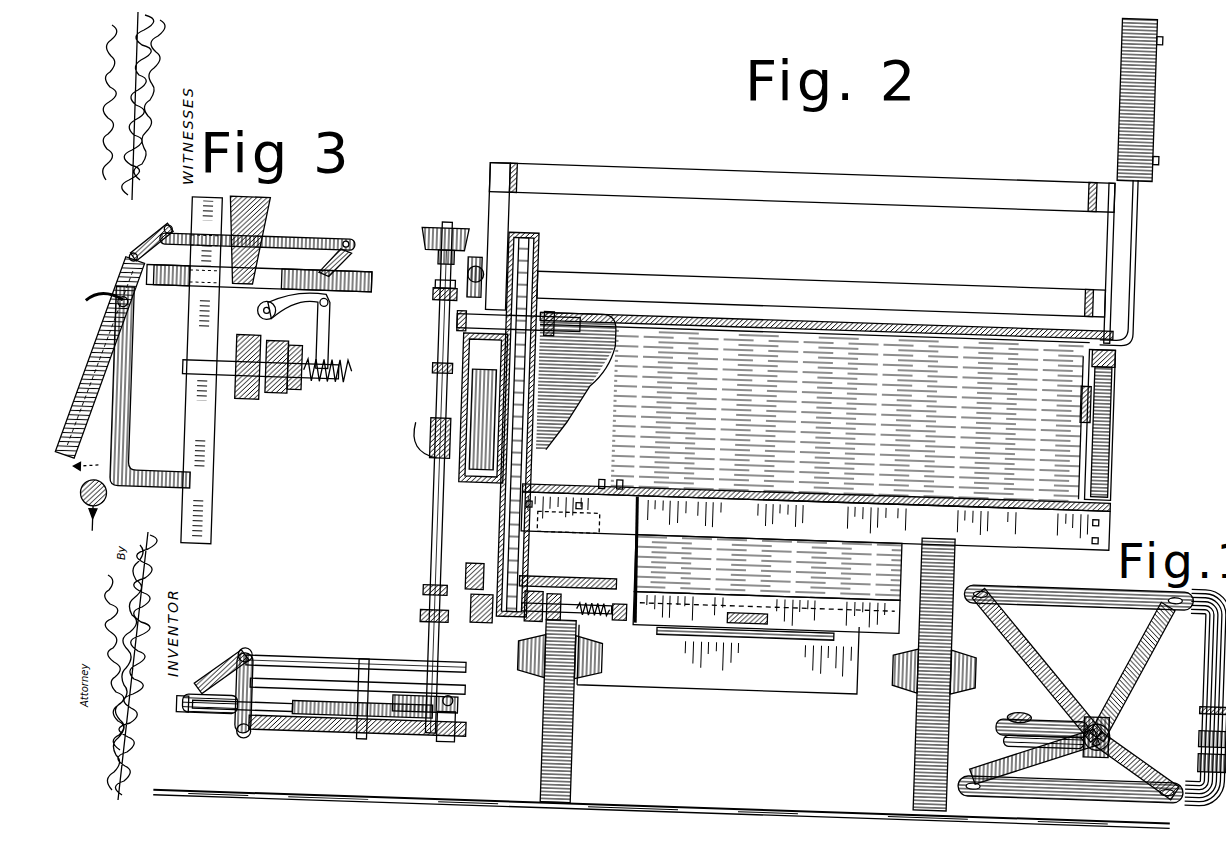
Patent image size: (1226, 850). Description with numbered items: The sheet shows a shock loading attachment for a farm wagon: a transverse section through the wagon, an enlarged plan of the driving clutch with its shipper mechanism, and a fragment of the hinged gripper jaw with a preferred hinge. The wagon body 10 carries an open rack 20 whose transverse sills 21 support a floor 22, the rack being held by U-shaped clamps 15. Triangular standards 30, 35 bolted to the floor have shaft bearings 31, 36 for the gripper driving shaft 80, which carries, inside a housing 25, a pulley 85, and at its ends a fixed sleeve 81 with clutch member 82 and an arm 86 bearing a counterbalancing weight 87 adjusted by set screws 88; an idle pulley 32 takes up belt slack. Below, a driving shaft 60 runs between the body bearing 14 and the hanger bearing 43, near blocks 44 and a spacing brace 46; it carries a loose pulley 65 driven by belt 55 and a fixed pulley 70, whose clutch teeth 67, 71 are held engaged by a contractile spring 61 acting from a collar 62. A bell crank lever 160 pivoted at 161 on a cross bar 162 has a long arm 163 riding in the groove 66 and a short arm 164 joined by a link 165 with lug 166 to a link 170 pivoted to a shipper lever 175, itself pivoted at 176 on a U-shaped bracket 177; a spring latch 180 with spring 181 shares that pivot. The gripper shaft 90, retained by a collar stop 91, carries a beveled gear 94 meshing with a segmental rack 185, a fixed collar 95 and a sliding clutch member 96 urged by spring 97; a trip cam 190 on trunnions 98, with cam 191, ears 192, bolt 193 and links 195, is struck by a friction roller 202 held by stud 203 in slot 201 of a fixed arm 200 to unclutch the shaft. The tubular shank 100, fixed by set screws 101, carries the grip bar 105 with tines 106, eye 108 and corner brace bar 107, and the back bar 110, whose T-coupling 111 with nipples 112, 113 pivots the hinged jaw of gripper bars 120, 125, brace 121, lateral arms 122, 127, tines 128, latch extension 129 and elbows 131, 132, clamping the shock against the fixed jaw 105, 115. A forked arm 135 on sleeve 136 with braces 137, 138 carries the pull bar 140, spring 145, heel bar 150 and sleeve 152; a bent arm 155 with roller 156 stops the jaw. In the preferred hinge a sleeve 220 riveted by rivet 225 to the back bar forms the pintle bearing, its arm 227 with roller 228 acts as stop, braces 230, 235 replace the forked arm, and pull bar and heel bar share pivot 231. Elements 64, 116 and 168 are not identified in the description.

In FIG. 2, the wagon body 10 is at (728, 563).
In FIG. 2, the shaft bearing 14 is at (692, 600).
In FIG. 2, the U-shaped bolts or clamps 15 is at (560, 500).
In FIG. 2, the open rack 20 is at (488, 182).
In FIG. 2, the transverse sills 21 is at (622, 494).
In FIG. 2, the floor 22 is at (696, 492).
In FIG. 2, the housing 25 is at (865, 360).
In FIG. 2, the machine standard 30 is at (590, 352).
In FIG. 2, the shaft bearing 31 is at (540, 318).
In FIG. 2, the idle pulley 32 is at (578, 405).
In FIG. 2, the machine standard 35 is at (1118, 377).
In FIG. 2, the shaft bearing 36 is at (1097, 335).
In FIG. 2, the shaft bearing 43 is at (485, 618).
In FIG. 2, the block 44 is at (640, 486).
In FIG. 2, the spacing brace 46 is at (483, 566).
In FIG. 3, the spacing brace 46 is at (207, 446).
In FIG. 2, the belt 55 is at (572, 668).
In FIG. 2, the driving shaft 60 is at (514, 618).
In FIG. 3, the driving shaft 60 is at (348, 368).
In FIG. 3, the contractile spring 61 is at (340, 362).
In FIG. 2, the collar 62 is at (645, 638).
In FIG. 2, the collar 64 is at (616, 622).
In FIG. 2, the loose pulley 65 is at (600, 618).
In FIG. 3, the loose pulley 65 is at (292, 395).
In FIG. 2, the groove 66 is at (600, 620).
In FIG. 3, the groove 66 is at (325, 386).
In FIG. 2, the clutch teeth 67 is at (560, 610).
In FIG. 3, the clutch teeth 67 is at (272, 396).
In FIG. 2, the fixed pulley 70 is at (530, 612).
In FIG. 3, the fixed pulley 70 is at (243, 402).
In FIG. 2, the clutch teeth 71 is at (548, 606).
In FIG. 3, the clutch teeth 71 is at (262, 402).
In FIG. 2, the gripper driving shaft 80 is at (575, 323).
In FIG. 2, the fixed sleeve 81 is at (438, 345).
In FIG. 2, the fixed clutch member 82 is at (436, 422).
In FIG. 2, the pulley 85 is at (530, 265).
In FIG. 2, the arm 86 is at (1135, 248).
In FIG. 2, the weight 87 is at (1123, 95).
In FIG. 2, the set screws 88 is at (1155, 40).
In FIG. 2, the gripper shaft 90 is at (440, 291).
In FIG. 3, the gripper shaft 90 is at (81, 500).
In FIG. 2, the collar stop 91 is at (441, 306).
In FIG. 2, the beveled gear 94 is at (430, 232).
In FIG. 2, the fixed collar 95 is at (432, 478).
In FIG. 2, the sliding clutch member 96 is at (432, 416).
In FIG. 2, the spring 97 is at (420, 456).
In FIG. 2, the trunnions 98 is at (448, 446).
In FIG. 3, the tubular shank 100 is at (107, 500).
In FIG. 2, the set screws 101 is at (436, 548).
In FIG. 2, the grip bar 105 is at (466, 694).
In FIG. 3, the tines 106 is at (405, 657).
In FIG. 3, the corner brace bar 107 is at (421, 722).
In FIG. 2, the eye 108 is at (436, 566).
In FIG. 3, the back bar 110 is at (336, 680).
In FIG. 3, the vertical bearing 111 is at (248, 660).
In FIG. 3, the nipple 112 is at (287, 690).
In FIG. 3, the nipple 113 is at (238, 720).
In FIG. 3, the fixed jaw 115 is at (465, 718).
In FIG. 3, the pin 116 is at (456, 736).
In FIG. 3, the upper gripper bar 120 is at (386, 657).
In FIG. 13, the upper gripper bar 120 is at (1027, 592).
In FIG. 2, the brace 121 is at (432, 602).
In FIG. 3, the brace 121 is at (371, 655).
In FIG. 2, the lateral arm 122 is at (446, 666).
In FIG. 3, the lower gripper bar 125 is at (332, 734).
In FIG. 13, the lower gripper bar 125 is at (1074, 797).
In FIG. 3, the lateral arm 127 is at (428, 722).
In FIG. 3, the lateral tines 128 is at (300, 728).
In FIG. 3, the forward extension 129 is at (396, 736).
In FIG. 3, the elbow 131 is at (264, 672).
In FIG. 13, the elbow 131 is at (1192, 616).
In FIG. 3, the elbow 132 is at (256, 731).
In FIG. 13, the elbow 132 is at (1200, 806).
In FIG. 3, the forked arm 135 is at (195, 716).
In FIG. 3, the sleeve 136 is at (236, 690).
In FIG. 3, the brace 137 is at (226, 670).
In FIG. 13, the brace 137 is at (1040, 642).
In FIG. 3, the brace 138 is at (246, 732).
In FIG. 13, the brace 138 is at (1035, 775).
In FIG. 3, the pull bar 140 is at (336, 650).
In FIG. 13, the pull bar 140 is at (1047, 728).
In FIG. 3, the contractile spring 145 is at (371, 738).
In FIG. 3, the heel bar 150 is at (206, 722).
In FIG. 13, the heel bar 150 is at (1005, 742).
In FIG. 13, the sleeve 152 is at (1020, 716).
In FIG. 3, the bent arm 155 is at (236, 675).
In FIG. 3, the anti-friction roller 156 is at (212, 720).
In FIG. 3, the bell crank lever 160 is at (326, 315).
In FIG. 3, the pivot 161 is at (326, 302).
In FIG. 3, the cross bar 162 is at (370, 285).
In FIG. 3, the long arm 163 is at (332, 345).
In FIG. 3, the short arm 164 is at (235, 324).
In FIG. 3, the link 165 is at (350, 266).
In FIG. 3, the lug 166 is at (262, 305).
In FIG. 2, the bracket 168 is at (588, 590).
In FIG. 3, the link 170 is at (300, 238).
In FIG. 3, the shipper lever 175 is at (95, 356).
In FIG. 3, the pivot 176 is at (115, 306).
In FIG. 2, the U-shaped bracket 177 is at (556, 582).
In FIG. 3, the U-shaped bracket 177 is at (272, 203).
In FIG. 3, the spring latch 180 is at (100, 298).
In FIG. 3, the spring 181 is at (145, 242).
In FIG. 2, the fixed segmental rack 185 is at (436, 396).
In FIG. 2, the trip cam 190 is at (428, 430).
In FIG. 2, the cam 191 is at (430, 408).
In FIG. 2, the ears 192 is at (430, 438).
In FIG. 2, the bolt 193 is at (430, 446).
In FIG. 2, the link 195 is at (425, 470).
In FIG. 2, the fixed arm 200 is at (484, 300).
In FIG. 2, the slot 201 is at (482, 280).
In FIG. 2, the friction roller 202 is at (466, 282).
In FIG. 2, the stud 203 is at (470, 268).
In FIG. 13, the sleeve 220 is at (1200, 714).
In FIG. 13, the rivet 225 is at (1203, 672).
In FIG. 13, the arm 227 is at (1200, 738).
In FIG. 13, the anti-friction roller 228 is at (1200, 758).
In FIG. 13, the brace 230 is at (1145, 653).
In FIG. 13, the pivot 231 is at (1099, 752).
In FIG. 13, the brace 235 is at (1132, 770).